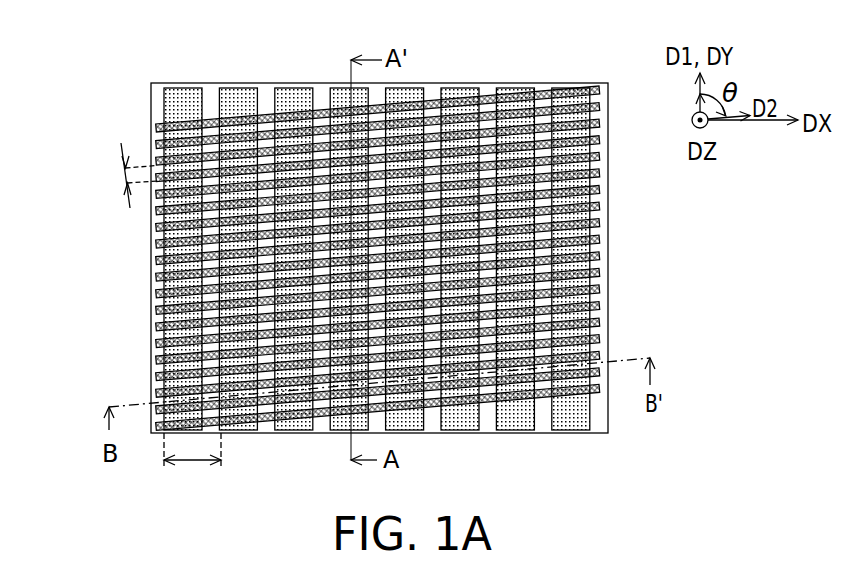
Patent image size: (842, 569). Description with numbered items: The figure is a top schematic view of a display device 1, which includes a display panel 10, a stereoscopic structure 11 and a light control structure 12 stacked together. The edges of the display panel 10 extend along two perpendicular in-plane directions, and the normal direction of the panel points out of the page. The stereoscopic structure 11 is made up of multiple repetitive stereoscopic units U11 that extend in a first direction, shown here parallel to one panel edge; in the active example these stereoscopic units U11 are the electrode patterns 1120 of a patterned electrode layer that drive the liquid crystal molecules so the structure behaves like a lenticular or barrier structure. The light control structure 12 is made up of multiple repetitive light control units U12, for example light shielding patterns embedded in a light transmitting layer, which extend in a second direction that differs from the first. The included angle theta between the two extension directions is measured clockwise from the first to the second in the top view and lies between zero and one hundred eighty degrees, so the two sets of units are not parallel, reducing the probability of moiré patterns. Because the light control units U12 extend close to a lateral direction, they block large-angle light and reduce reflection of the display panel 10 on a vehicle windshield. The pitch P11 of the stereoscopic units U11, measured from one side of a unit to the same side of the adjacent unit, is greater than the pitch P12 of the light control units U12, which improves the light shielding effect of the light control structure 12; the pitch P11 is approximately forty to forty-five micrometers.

The display device 1 is at (657, 492).
The display panel 10 is at (157, 83).
The stereoscopic structure 11 is at (377, 215).
The stereoscopic unit U11 is at (183, 95).
The electrode pattern 1120 is at (377, 231).
The light control structure 12 is at (332, 249).
The light control unit U12 is at (156, 128).
The pitch of the stereoscopic units P11 is at (192, 466).
The pitch of the light control units P12 is at (114, 175).